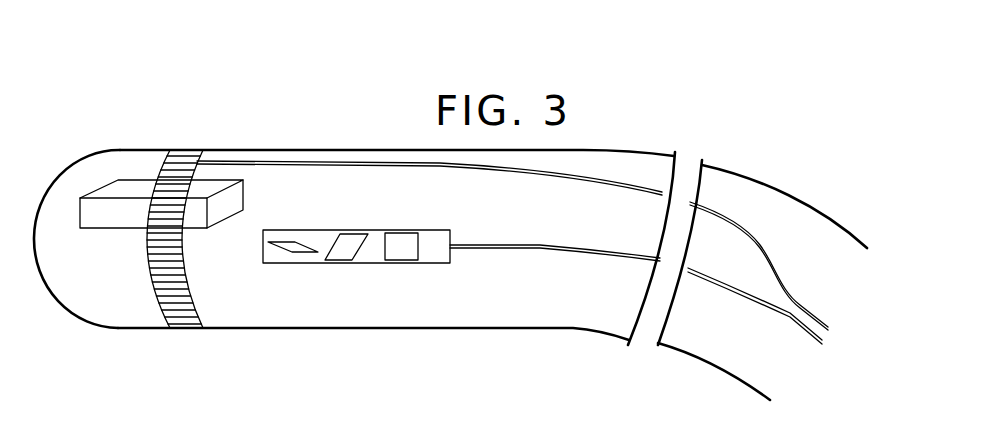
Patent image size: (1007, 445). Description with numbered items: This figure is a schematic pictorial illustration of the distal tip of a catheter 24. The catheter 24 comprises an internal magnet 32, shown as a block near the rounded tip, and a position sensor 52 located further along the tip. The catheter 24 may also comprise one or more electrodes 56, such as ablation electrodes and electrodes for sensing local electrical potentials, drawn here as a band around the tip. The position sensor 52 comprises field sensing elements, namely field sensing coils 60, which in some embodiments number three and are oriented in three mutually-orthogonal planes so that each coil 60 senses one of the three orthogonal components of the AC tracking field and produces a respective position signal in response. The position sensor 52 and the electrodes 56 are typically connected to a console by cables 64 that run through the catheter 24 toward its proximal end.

The catheter 24 is at (260, 137).
The internal magnet 32 is at (92, 215).
The position sensor 52 is at (403, 265).
The electrodes 56 is at (183, 313).
The field sensing coils 60 is at (392, 255).
The cables 64 is at (800, 293).